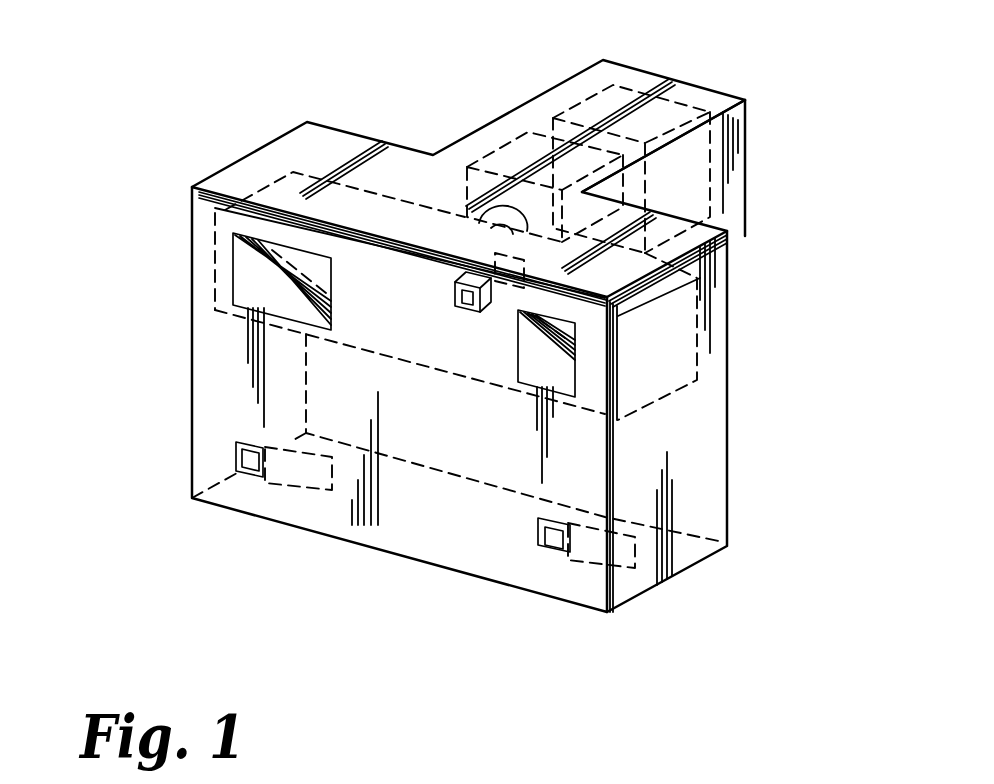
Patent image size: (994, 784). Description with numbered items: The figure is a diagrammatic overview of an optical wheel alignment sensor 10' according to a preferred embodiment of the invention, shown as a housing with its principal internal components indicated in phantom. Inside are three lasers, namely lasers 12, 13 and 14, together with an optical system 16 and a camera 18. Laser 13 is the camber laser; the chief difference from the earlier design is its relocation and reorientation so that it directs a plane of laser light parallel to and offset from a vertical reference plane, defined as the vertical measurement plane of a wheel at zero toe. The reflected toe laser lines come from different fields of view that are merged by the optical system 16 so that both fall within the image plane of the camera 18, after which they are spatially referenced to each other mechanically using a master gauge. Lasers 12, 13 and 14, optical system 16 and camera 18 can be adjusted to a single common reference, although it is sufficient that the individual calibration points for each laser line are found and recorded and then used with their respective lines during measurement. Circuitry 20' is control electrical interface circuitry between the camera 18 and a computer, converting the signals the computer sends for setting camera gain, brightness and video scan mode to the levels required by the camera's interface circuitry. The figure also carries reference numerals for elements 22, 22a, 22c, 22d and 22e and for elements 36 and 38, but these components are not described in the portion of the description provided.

The sensor 10' is at (468, 335).
The laser 12 is at (588, 562).
The laser 13 is at (476, 310).
The laser 14 is at (310, 490).
The optical system 16 is at (210, 272).
The camera 18 is at (700, 151).
The circuitry 20' is at (691, 212).
The cable strip 22 is at (728, 308).
The cable strip connector 22a is at (555, 552).
The cable strip connector 22c is at (237, 462).
The cable strip window 22d is at (568, 359).
The cable strip window 22e is at (233, 260).
The sensor element 36 is at (563, 375).
The sensor element 38 is at (250, 297).